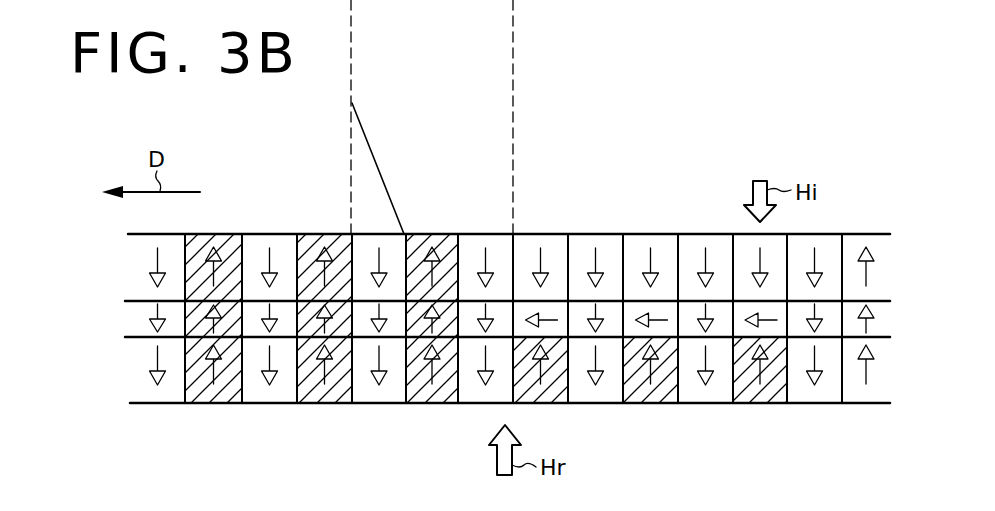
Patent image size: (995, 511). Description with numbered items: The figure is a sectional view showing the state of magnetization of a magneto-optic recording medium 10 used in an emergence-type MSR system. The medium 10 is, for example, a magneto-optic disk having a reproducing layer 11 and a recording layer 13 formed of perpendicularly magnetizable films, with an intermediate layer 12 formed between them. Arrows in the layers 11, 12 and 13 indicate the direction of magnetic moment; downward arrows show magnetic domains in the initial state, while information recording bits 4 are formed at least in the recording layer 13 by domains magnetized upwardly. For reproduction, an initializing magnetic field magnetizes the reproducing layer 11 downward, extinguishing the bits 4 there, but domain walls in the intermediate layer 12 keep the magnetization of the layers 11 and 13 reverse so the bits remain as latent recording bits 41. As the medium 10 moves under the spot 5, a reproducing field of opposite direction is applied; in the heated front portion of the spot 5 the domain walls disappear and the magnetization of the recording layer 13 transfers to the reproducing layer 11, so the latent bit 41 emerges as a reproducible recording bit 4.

The information recording bit 4 is at (310, 234).
The spot 5 is at (625, 234).
The magneto-optic recording medium 10 is at (707, 234).
The reproducing layer 11 is at (138, 254).
The intermediate layer 12 is at (138, 322).
The recording layer 13 is at (281, 390).
The latent recording bit 41 is at (742, 405).